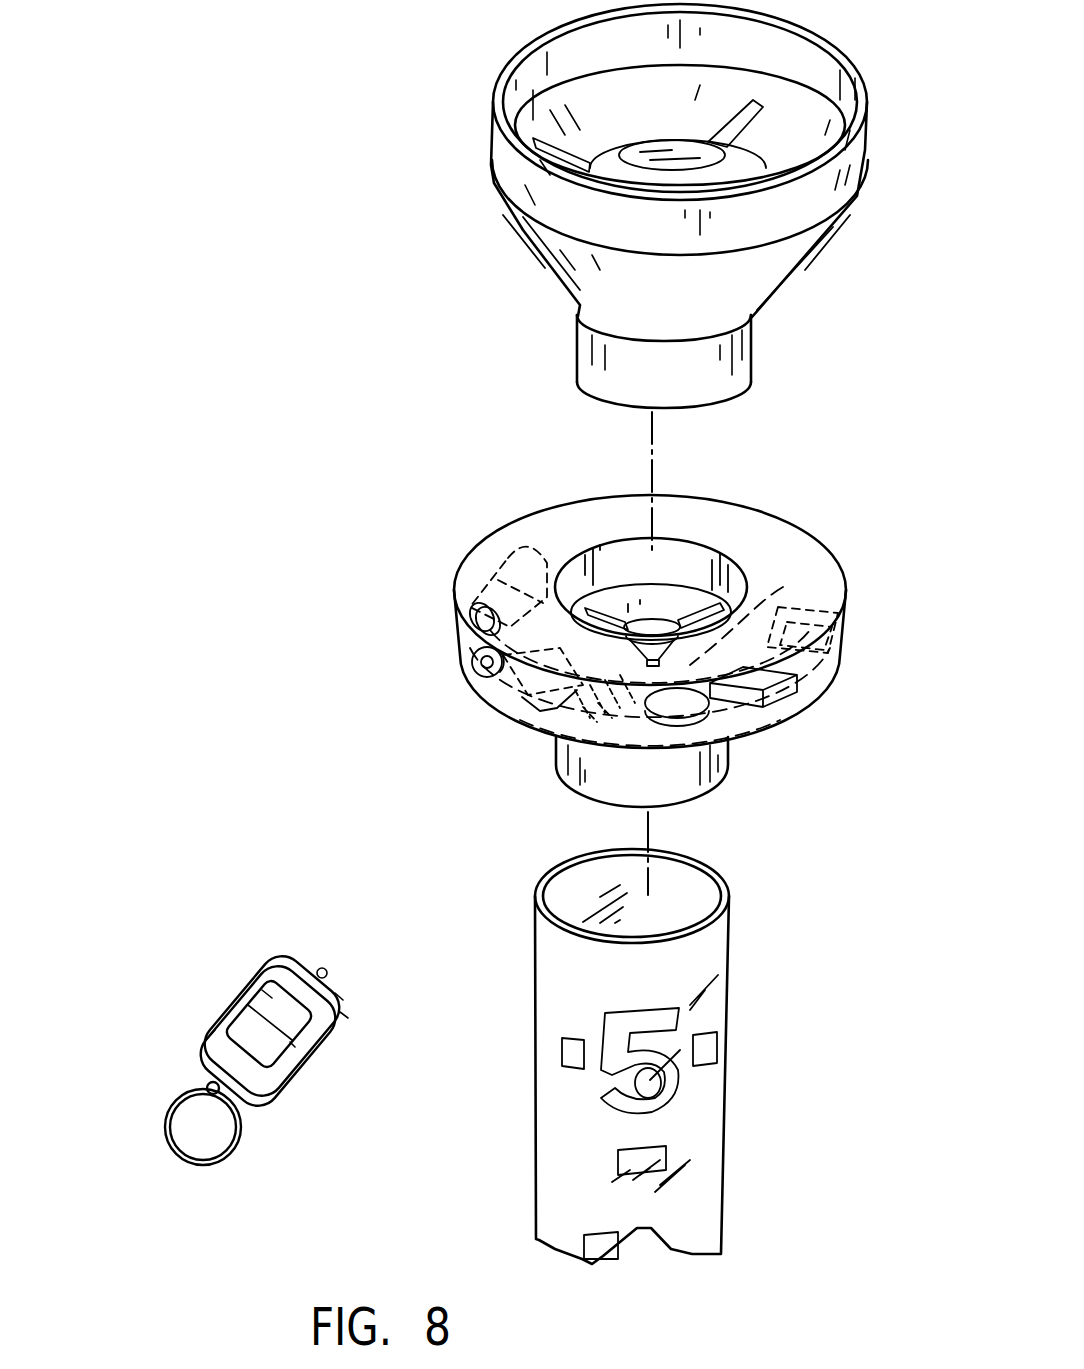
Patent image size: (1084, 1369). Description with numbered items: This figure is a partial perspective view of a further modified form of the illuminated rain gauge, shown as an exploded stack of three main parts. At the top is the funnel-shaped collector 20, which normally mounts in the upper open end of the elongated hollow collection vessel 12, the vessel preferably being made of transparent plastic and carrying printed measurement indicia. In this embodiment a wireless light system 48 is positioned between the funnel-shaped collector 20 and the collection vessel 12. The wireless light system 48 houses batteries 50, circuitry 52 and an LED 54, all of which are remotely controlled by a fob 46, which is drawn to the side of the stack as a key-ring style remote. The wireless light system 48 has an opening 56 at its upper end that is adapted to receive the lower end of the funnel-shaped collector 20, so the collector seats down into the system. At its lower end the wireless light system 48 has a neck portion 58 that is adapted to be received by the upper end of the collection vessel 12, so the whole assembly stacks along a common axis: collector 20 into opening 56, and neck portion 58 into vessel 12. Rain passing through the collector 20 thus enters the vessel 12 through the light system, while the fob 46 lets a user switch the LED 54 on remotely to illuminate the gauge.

The collection vessel 12 is at (503, 1102).
The funnel-shaped collector 20 is at (509, 263).
The fob 46 is at (192, 978).
The wireless light system 48 is at (417, 687).
The batteries 50 is at (498, 580).
The circuitry 52 is at (818, 702).
The LED 54 is at (783, 587).
The opening 56 is at (683, 548).
The neck portion 58 is at (707, 785).